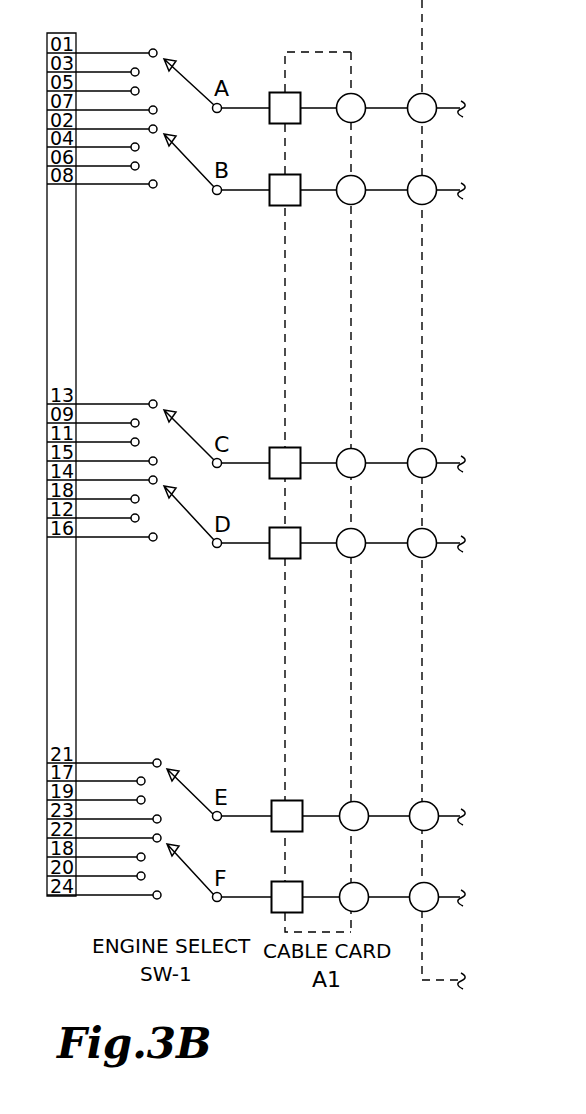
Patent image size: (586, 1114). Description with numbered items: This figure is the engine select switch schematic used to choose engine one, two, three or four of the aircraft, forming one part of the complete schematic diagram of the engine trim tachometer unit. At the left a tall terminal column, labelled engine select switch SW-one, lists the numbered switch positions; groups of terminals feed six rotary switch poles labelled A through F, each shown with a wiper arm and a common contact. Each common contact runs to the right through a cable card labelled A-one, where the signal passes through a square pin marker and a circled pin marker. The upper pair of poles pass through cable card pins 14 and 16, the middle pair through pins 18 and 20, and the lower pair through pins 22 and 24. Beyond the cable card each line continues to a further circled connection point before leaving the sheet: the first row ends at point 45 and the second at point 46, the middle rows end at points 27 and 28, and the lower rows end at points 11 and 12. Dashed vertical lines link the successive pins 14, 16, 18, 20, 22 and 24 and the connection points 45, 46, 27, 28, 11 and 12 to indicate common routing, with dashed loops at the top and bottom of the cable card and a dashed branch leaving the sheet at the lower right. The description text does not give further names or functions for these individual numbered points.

The cable card connector 14 / circuit 14 is at (318, 108).
The cable card connector 16 / circuit 16 is at (318, 190).
The cable card connector 18 / circuit 18 is at (318, 463).
The cable card connector 20 / circuit 20 is at (318, 543).
The cable card connector 22 / circuit 22 is at (320, 816).
The cable card connector 24 / circuit 24 is at (320, 897).
The terminal 45 is at (422, 108).
The terminal 46 is at (422, 190).
The terminal 27 is at (422, 463).
The terminal 28 is at (422, 543).
The terminal 11 is at (424, 816).
The terminal 12 is at (424, 897).